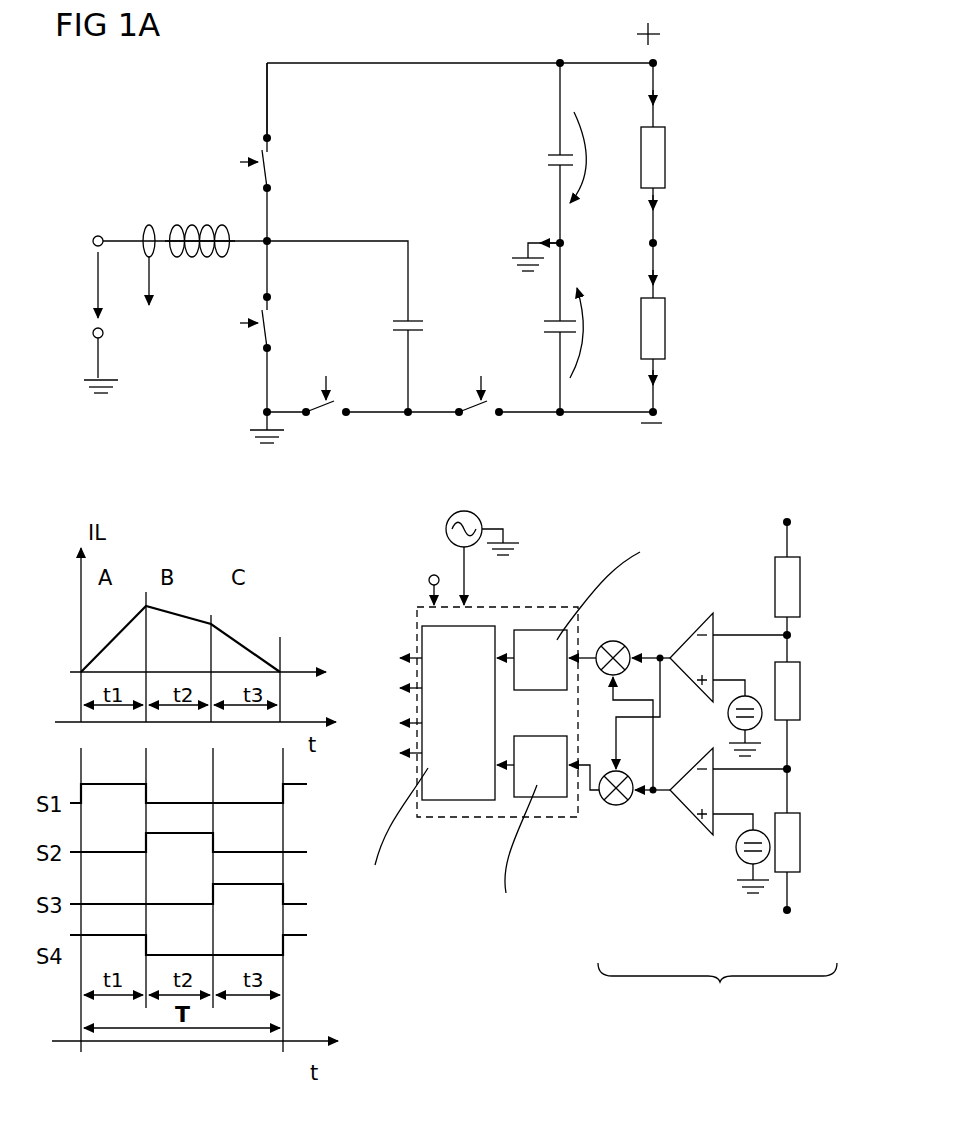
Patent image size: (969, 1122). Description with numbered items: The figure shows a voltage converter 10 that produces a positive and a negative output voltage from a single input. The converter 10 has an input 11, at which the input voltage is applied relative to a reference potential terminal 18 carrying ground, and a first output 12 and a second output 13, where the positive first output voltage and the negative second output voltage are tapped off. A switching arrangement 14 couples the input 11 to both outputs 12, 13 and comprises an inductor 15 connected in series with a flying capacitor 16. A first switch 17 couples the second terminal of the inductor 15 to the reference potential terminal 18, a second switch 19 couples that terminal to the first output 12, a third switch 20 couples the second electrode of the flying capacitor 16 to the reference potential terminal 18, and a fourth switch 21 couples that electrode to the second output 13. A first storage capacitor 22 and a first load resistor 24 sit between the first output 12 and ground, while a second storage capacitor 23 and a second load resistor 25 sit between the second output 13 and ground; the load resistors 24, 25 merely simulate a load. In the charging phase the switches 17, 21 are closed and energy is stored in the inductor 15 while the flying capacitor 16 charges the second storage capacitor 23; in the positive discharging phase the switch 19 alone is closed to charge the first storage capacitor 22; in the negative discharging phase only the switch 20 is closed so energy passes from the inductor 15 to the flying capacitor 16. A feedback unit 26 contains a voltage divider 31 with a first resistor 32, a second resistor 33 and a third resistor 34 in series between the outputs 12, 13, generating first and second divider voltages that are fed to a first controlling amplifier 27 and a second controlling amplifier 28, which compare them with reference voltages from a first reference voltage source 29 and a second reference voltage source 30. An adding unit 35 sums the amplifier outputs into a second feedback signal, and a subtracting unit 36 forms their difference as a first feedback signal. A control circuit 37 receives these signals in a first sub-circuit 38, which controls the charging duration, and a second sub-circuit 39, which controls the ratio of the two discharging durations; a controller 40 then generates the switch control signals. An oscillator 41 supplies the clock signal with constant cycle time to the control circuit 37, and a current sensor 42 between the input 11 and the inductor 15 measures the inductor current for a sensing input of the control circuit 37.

The voltage converter 10 is at (152, 120).
The input 11 is at (93, 241).
The first output 12 is at (656, 62).
The second output 13 is at (656, 413).
The switching arrangement 14 is at (231, 113).
The inductor 15 is at (207, 226).
The flying capacitor 16 is at (412, 320).
The first switch 17 is at (263, 335).
The reference potential terminal 18 is at (98, 380).
The second switch 19 is at (268, 158).
The third switch 20 is at (326, 413).
The fourth switch 21 is at (480, 414).
The first storage capacitor 22 is at (552, 152).
The second storage capacitor 23 is at (553, 326).
The first load resistor 24 is at (660, 154).
The second load resistor 25 is at (660, 323).
The feedback unit 26 is at (717, 988).
The first controlling amplifier 27 is at (690, 637).
The second controlling amplifier 28 is at (705, 828).
The first reference voltage source 29 is at (730, 726).
The second reference voltage source 30 is at (740, 860).
The voltage divider 31 is at (820, 534).
The first resistor 32 is at (800, 588).
The second resistor 33 is at (800, 702).
The third resistor 34 is at (800, 870).
The adding unit 35 is at (620, 642).
The subtracting unit 36 is at (612, 806).
The control circuit 37 is at (500, 817).
The first sub-circuit 38 is at (538, 797).
The second sub-circuit 39 is at (535, 630).
The controller 40 is at (437, 800).
The oscillator 41 is at (446, 529).
The current sensor 42 is at (149, 226).